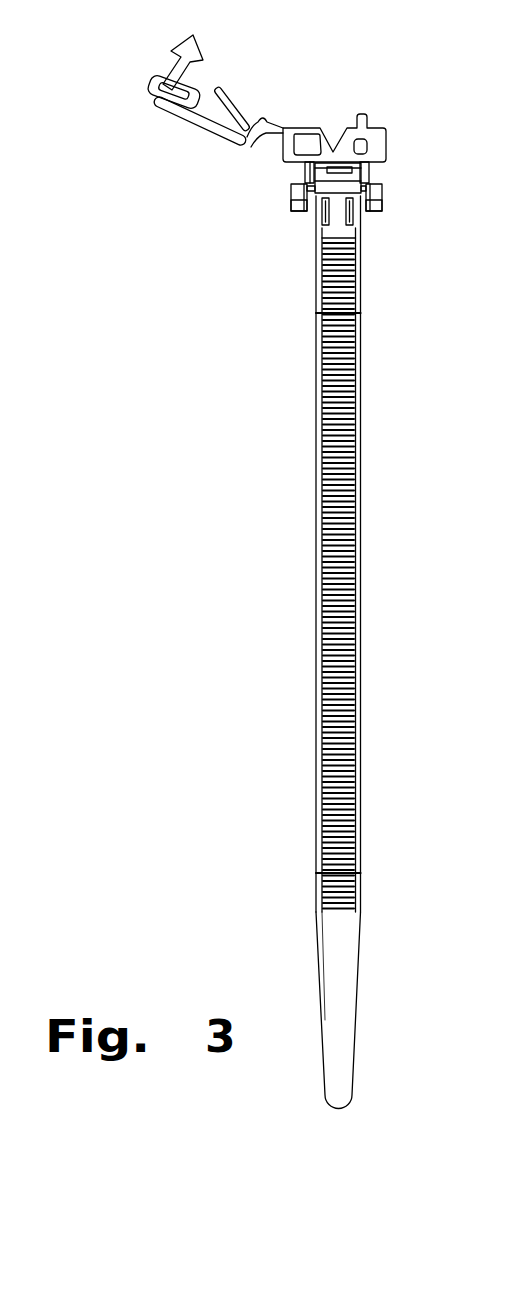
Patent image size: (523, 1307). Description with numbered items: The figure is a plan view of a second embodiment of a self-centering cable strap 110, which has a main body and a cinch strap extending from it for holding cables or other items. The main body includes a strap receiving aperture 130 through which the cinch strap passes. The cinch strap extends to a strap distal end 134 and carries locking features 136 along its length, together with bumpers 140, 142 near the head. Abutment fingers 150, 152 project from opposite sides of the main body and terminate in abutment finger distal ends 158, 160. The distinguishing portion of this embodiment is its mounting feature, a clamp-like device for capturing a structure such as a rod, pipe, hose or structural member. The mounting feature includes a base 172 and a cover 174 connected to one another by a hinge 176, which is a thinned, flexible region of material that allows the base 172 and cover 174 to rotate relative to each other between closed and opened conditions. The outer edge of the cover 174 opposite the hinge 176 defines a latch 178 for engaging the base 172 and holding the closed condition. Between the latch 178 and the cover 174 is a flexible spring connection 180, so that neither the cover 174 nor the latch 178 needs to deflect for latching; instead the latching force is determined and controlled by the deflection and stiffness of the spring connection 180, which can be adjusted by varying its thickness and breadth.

The self-centering cable strap 110 is at (150, 196).
The strap receiving aperture 130 is at (370, 183).
The strap distal end 134 is at (345, 1063).
The locking features 136 is at (343, 557).
The bumper 140 is at (322, 215).
The bumper 142 is at (353, 221).
The abutment finger 150 is at (278, 192).
The abutment finger 152 is at (408, 196).
The abutment finger distal end 158 is at (296, 208).
The abutment finger distal end 160 is at (377, 211).
The base 172 is at (380, 137).
The cover 174 is at (163, 110).
The hinge 176 is at (272, 128).
The latch 178 is at (172, 61).
The spring connection 180 is at (203, 119).